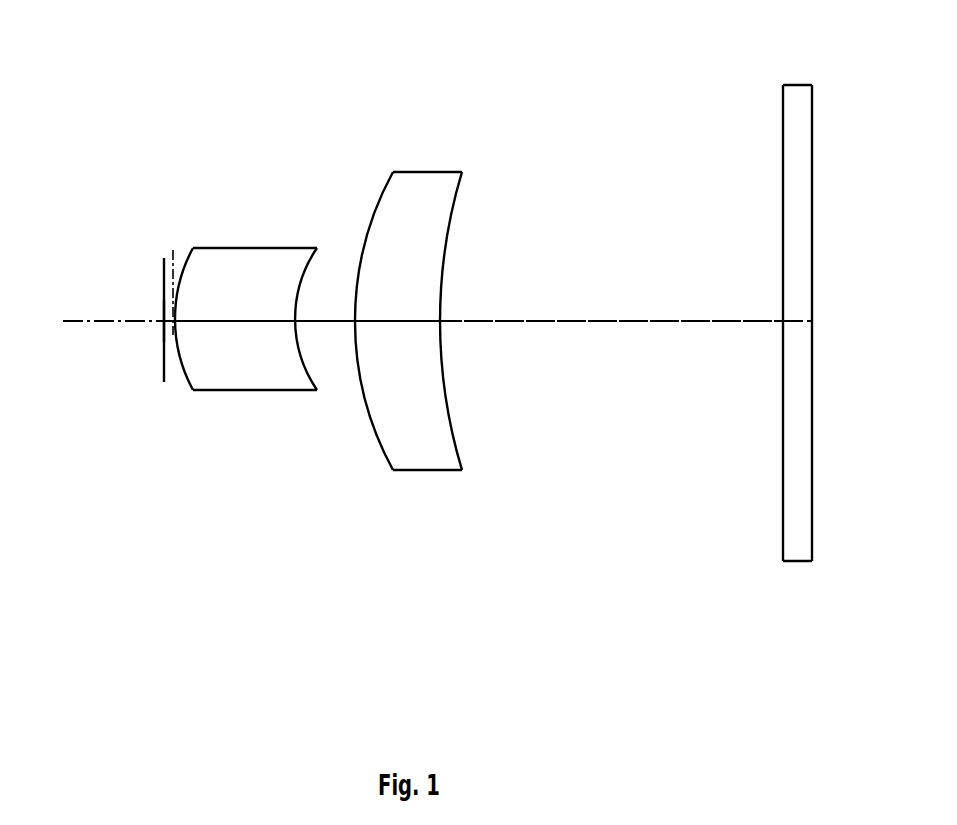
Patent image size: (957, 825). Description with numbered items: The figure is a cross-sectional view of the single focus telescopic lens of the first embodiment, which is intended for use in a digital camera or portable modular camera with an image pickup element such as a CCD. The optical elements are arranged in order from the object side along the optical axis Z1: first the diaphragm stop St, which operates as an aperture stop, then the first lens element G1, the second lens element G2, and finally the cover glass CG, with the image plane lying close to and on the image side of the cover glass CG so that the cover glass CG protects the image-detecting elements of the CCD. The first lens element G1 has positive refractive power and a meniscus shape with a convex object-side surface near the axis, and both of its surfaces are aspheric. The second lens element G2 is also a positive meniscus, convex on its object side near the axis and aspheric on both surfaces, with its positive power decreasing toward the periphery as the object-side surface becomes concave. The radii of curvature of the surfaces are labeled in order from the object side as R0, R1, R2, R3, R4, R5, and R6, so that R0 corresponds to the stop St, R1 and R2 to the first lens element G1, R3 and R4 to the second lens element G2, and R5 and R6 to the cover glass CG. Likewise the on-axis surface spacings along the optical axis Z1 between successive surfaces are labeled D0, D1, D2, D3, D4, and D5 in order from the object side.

The optical axis Z1 is at (47, 320).
The diaphragm stop St is at (162, 292).
The on-axis surface spacing D0 is at (175, 274).
The on-axis surface spacing D1 is at (235, 304).
The on-axis surface spacing D2 is at (325, 304).
The on-axis surface spacing D3 is at (397, 304).
The on-axis surface spacing D4 is at (611, 305).
The on-axis surface spacing D5 is at (797, 305).
The first lens element G1 is at (249, 318).
The second lens element G2 is at (423, 315).
The cover glass CG is at (798, 296).
The radius of curvature R0 is at (162, 373).
The radius of curvature R1 is at (185, 379).
The radius of curvature R2 is at (316, 383).
The radius of curvature R3 is at (386, 448).
The radius of curvature R4 is at (451, 425).
The radius of curvature R5 is at (783, 513).
The radius of curvature R6 is at (812, 503).